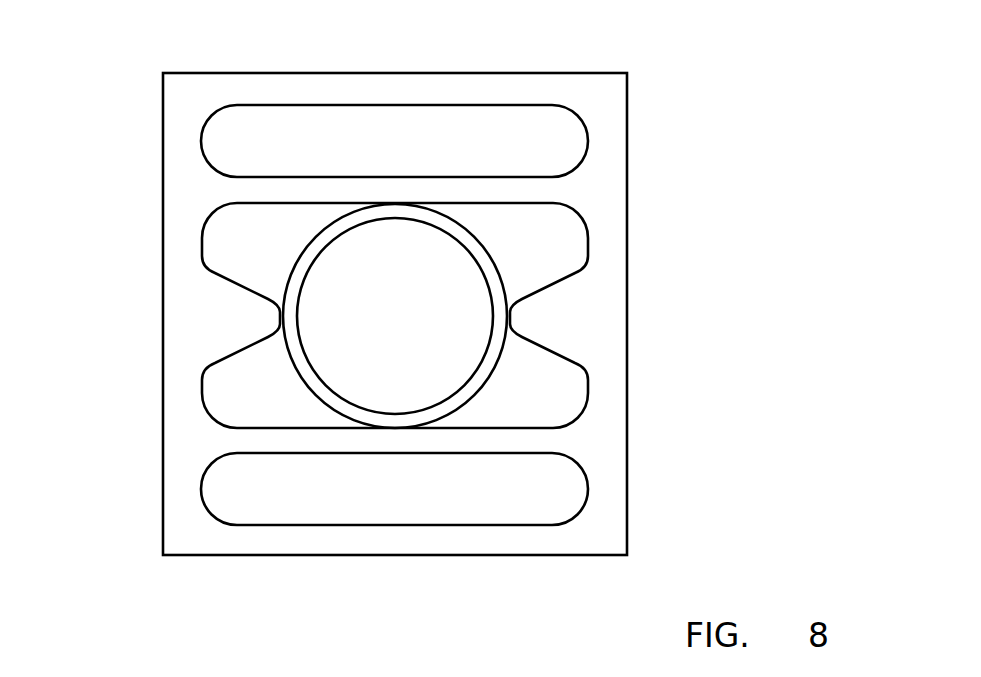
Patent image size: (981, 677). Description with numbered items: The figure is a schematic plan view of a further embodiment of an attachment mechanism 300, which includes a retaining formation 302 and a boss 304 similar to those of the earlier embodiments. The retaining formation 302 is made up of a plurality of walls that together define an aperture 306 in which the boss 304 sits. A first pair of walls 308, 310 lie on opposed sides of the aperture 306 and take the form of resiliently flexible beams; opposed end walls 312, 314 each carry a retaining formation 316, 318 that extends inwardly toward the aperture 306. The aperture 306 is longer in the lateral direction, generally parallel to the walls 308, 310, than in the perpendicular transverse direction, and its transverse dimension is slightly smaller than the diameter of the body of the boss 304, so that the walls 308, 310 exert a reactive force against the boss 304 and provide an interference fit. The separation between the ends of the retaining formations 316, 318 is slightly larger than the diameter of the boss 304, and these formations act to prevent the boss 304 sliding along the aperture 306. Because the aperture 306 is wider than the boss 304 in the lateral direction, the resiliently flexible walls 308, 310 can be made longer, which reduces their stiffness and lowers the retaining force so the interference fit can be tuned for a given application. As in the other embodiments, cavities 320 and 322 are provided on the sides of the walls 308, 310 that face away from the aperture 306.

The attachment mechanism 300 is at (690, 135).
The retaining formation 302 is at (627, 322).
The boss 304 is at (490, 280).
The aperture 306 is at (568, 225).
The first wall 308 is at (520, 190).
The first wall 310 is at (490, 440).
The end wall 312 is at (232, 330).
The end wall 314 is at (561, 322).
The retaining formation 316 is at (260, 313).
The retaining formation 318 is at (533, 313).
The cavity 320 is at (327, 140).
The cavity 322 is at (312, 490).